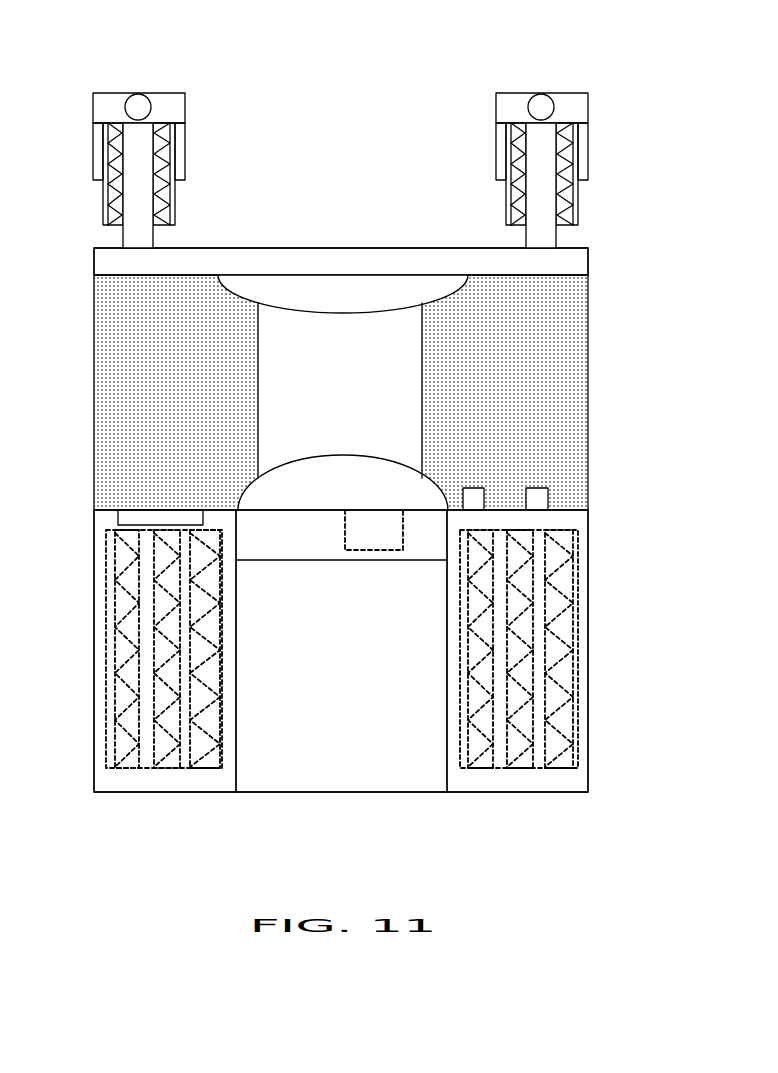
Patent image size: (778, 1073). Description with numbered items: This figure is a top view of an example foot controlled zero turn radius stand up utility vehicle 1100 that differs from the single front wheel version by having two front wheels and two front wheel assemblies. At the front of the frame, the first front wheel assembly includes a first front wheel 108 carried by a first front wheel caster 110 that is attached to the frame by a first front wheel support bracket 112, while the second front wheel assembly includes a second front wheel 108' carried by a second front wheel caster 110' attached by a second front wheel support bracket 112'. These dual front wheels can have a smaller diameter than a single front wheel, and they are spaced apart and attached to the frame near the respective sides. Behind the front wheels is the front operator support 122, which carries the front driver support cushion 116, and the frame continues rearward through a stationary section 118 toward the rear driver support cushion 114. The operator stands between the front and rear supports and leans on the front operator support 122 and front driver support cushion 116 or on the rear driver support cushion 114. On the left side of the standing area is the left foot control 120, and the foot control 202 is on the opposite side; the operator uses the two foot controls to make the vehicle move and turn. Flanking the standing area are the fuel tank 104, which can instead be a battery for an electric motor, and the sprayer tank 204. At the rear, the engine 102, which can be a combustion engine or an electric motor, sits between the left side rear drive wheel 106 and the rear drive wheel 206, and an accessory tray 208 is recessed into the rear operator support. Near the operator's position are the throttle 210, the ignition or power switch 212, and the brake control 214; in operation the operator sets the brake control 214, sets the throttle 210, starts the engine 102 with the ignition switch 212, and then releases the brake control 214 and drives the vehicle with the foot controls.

The foot controlled zero turn radius stand up utility vehicle 1100 is at (73, 38).
The engine 102 is at (341, 651).
The fuel tank 104 is at (121, 649).
The left side rear drive wheel 106 is at (137, 639).
The first front wheel 108 is at (175, 168).
The second front wheel 108' is at (579, 168).
The first front wheel caster 110 is at (147, 72).
The second front wheel caster 110' is at (551, 72).
The first front wheel support bracket 112 is at (189, 185).
The second front wheel support bracket 112' is at (593, 185).
The rear driver support cushion 114 is at (343, 452).
The front driver support cushion 116 is at (343, 326).
The stationary section 118 is at (340, 390).
The left foot control 120 is at (148, 392).
The front operator support 122 is at (382, 250).
The left foot control 202 is at (536, 392).
The sprayer tank 204 is at (548, 629).
The left rear drive wheel 206 is at (560, 649).
The accessory tray 208 is at (333, 531).
The throttle 210 is at (483, 461).
The ignition switch 212 is at (545, 461).
The brake control 214 is at (160, 481).